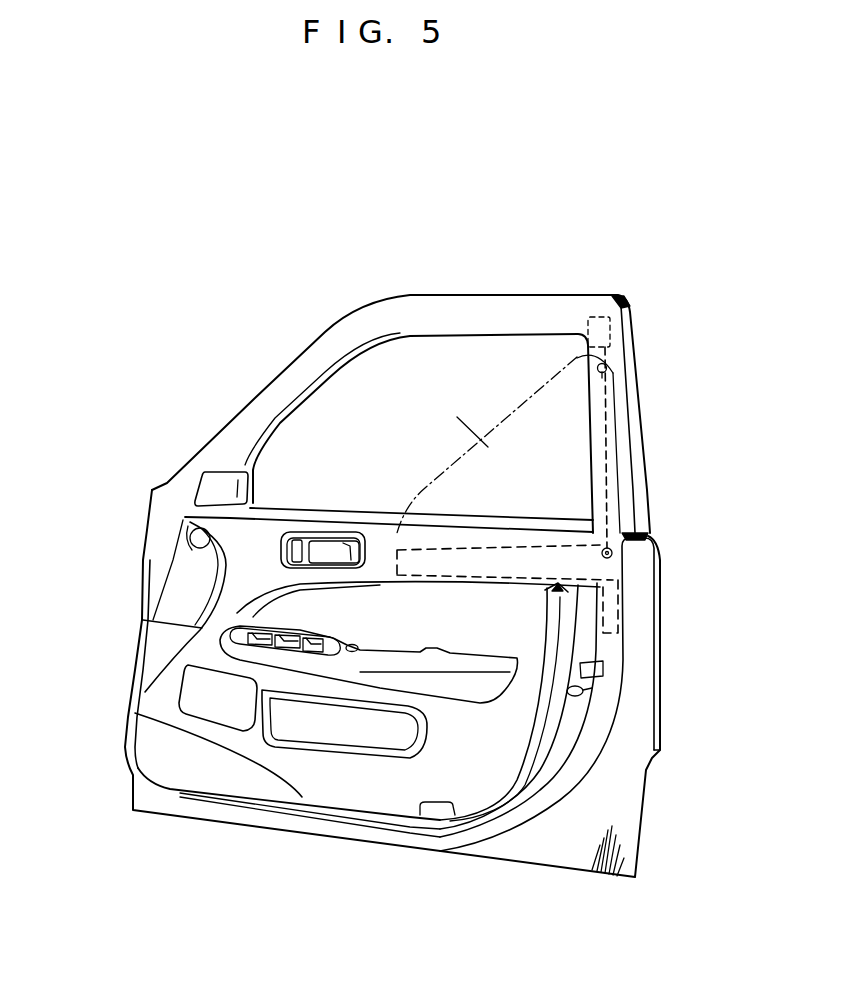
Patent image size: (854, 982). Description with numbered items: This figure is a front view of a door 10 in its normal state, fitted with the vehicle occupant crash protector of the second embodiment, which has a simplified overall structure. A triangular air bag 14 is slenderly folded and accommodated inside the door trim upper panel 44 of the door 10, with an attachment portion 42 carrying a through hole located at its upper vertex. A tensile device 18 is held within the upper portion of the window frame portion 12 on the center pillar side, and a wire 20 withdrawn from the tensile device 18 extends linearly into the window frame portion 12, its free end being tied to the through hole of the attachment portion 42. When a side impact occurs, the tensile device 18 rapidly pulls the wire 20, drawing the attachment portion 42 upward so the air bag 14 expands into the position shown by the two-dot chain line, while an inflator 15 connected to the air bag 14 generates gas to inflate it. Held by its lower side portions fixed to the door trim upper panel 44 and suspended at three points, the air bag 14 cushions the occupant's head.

The door 10 is at (144, 533).
The window frame portion 12 is at (632, 318).
The air bag 14 is at (457, 417).
The inflator 15 is at (613, 603).
The tensile device 18 is at (600, 316).
The wire 20 is at (603, 453).
The attachment portion 42 is at (613, 373).
The door trim upper panel 44 is at (383, 530).